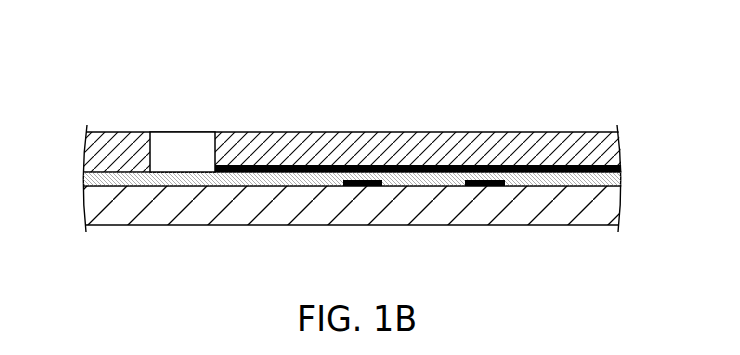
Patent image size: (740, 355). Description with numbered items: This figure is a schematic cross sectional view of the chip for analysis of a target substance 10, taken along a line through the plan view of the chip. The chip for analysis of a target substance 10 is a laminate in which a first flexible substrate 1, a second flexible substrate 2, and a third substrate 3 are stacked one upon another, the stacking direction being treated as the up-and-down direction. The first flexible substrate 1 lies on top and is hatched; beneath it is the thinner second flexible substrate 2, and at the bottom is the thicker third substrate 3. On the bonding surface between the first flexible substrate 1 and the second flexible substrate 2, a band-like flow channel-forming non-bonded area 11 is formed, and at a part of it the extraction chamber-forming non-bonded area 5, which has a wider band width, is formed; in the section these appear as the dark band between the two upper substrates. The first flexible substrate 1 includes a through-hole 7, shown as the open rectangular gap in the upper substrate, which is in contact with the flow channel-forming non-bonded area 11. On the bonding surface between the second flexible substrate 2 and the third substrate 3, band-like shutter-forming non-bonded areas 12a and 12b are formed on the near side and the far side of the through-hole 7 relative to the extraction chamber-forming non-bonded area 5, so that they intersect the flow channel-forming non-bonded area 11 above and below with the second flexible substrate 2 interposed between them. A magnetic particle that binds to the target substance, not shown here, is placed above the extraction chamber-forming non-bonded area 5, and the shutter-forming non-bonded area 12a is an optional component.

The first flexible substrate 1 is at (102, 149).
The second flexible substrate 2 is at (102, 178).
The third substrate 3 is at (102, 207).
The extraction chamber-forming non-bonded area 5 is at (423, 165).
The through-hole 7 is at (182, 150).
The chip for analysis of a target substance 10 is at (580, 36).
The flow channel-forming non-bonded area 11 is at (292, 165).
The shutter-forming non-bonded area 12a is at (362, 187).
The shutter-forming non-bonded area 12b is at (483, 187).